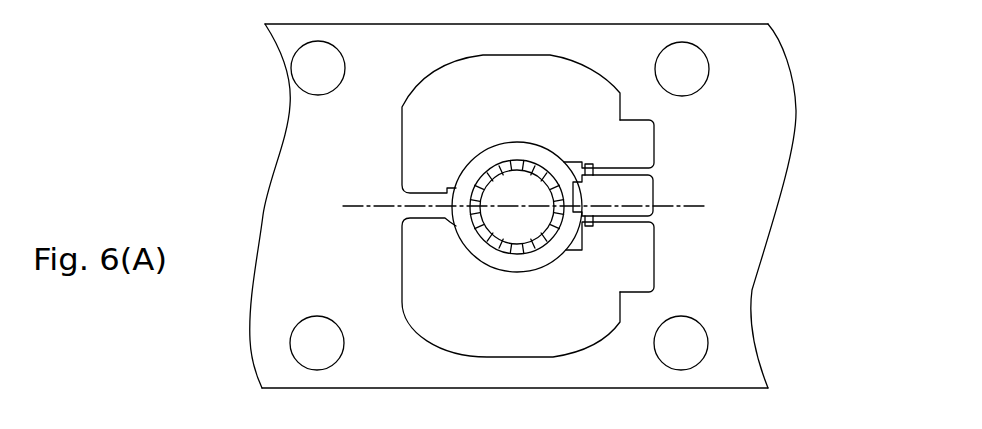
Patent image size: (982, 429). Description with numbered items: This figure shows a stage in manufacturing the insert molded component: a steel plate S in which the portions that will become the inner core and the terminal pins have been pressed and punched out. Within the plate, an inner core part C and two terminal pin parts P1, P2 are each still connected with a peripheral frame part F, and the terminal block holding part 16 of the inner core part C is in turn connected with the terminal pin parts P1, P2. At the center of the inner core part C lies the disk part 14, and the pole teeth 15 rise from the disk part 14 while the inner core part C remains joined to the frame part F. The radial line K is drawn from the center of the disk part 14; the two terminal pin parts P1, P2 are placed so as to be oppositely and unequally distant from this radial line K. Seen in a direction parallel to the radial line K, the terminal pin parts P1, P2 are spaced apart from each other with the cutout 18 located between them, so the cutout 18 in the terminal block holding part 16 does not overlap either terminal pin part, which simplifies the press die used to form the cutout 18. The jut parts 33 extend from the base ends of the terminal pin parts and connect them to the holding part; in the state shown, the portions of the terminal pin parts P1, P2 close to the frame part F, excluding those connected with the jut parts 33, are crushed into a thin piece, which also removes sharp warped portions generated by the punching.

The steel plate S is at (750, 23).
The peripheral frame part F is at (539, 206).
The inner core part C is at (517, 203).
The terminal pin part P1 is at (607, 168).
The terminal pin part P2 is at (608, 224).
The radial line K is at (533, 203).
The disk part 14 is at (503, 262).
The pole teeth 15 is at (487, 228).
The terminal block holding part 16 is at (619, 220).
The cutout 18 is at (575, 199).
The jut parts 33 is at (588, 162).